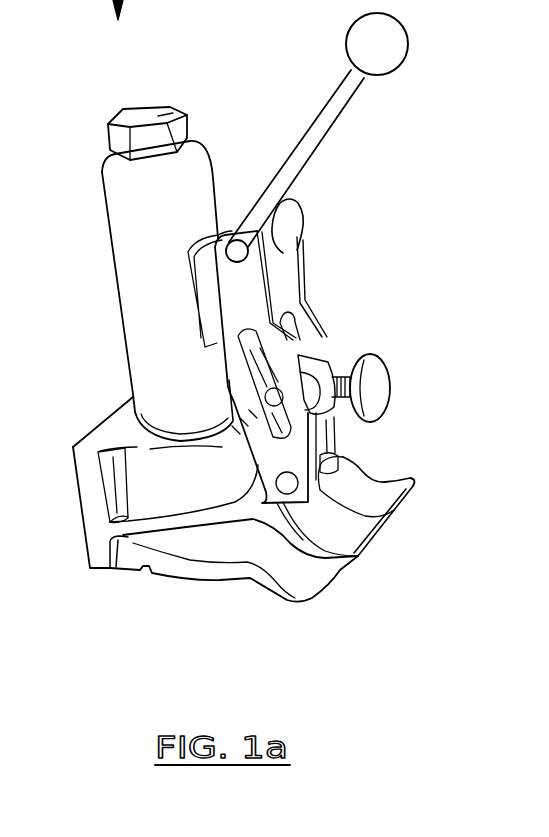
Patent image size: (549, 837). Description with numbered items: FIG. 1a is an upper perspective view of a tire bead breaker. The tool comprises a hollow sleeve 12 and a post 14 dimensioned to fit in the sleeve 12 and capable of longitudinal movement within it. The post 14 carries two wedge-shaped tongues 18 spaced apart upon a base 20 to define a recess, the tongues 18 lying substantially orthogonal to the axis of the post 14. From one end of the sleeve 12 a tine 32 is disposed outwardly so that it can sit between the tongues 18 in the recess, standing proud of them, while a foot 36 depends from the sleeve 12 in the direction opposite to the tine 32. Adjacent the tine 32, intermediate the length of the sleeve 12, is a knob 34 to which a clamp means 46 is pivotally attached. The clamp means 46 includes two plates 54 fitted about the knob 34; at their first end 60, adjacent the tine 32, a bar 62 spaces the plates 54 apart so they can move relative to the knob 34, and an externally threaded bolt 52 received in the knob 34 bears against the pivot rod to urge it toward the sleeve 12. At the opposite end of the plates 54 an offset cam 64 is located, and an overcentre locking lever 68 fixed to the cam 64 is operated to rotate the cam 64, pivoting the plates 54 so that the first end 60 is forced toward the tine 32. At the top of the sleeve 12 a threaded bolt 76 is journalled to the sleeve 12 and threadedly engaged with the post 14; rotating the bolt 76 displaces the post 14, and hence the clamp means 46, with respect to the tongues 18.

The sleeve 12 is at (88, 352).
The post 14 is at (230, 606).
The tongues 18 is at (383, 507).
The base 20 is at (185, 587).
The tine 32 is at (353, 534).
The knob 34 is at (328, 363).
The foot 36 is at (84, 520).
The clamp means 46 is at (410, 273).
The bolt 52 is at (384, 389).
The plates 54 is at (252, 297).
The first end 60 is at (302, 237).
The bar 62 is at (340, 454).
The offset cam 64 is at (292, 203).
The overcentre locking lever 68 is at (333, 128).
The threaded bolt 76 is at (168, 101).